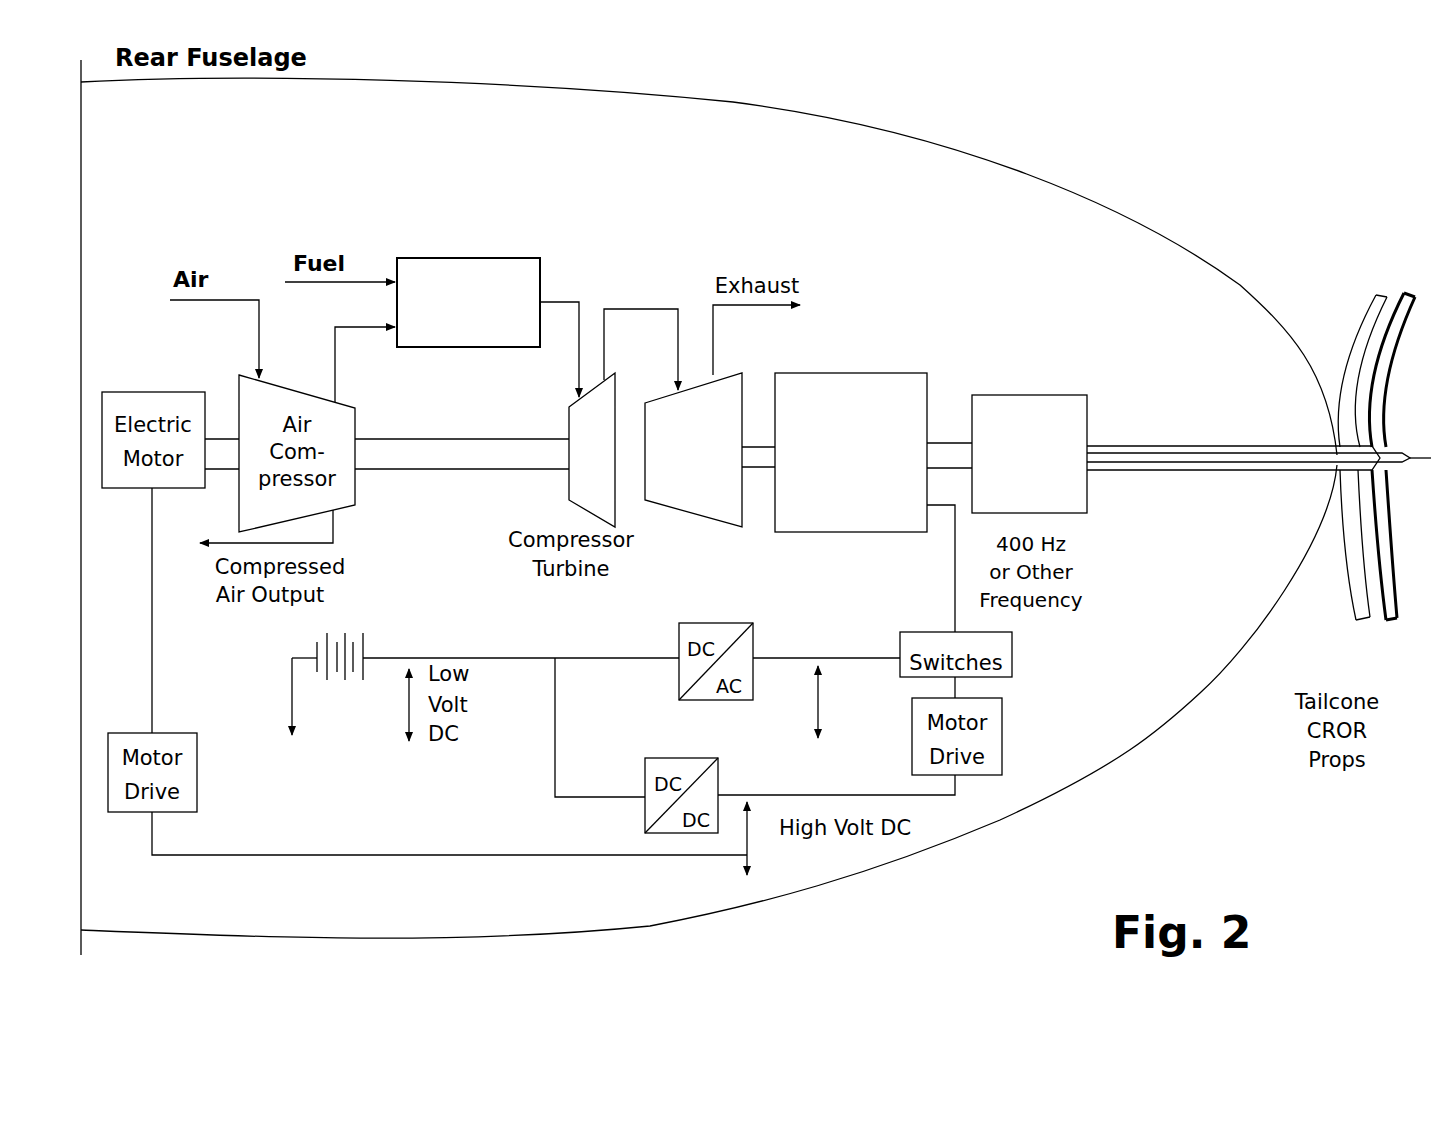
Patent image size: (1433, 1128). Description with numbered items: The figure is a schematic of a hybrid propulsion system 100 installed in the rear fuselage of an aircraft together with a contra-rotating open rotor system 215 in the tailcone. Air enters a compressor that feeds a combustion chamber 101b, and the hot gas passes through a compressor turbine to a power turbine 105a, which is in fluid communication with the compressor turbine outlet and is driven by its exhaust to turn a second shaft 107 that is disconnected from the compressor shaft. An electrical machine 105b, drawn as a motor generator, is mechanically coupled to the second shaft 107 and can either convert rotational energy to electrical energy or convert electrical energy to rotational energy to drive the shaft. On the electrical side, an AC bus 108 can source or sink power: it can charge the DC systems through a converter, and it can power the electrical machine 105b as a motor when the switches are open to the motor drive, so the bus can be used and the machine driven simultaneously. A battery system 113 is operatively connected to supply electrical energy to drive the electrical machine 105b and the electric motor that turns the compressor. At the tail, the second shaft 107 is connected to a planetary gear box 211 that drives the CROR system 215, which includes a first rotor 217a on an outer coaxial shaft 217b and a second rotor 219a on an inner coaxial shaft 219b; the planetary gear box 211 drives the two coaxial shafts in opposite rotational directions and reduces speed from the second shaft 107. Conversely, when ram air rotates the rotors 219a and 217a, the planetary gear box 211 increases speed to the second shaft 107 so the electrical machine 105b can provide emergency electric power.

The hybrid propulsion system 100 is at (888, 264).
The combustion chamber 101b is at (467, 256).
The power turbine 105a is at (715, 507).
The electrical machine 105b is at (824, 411).
The second shaft 107 is at (945, 453).
The AC bus 108 is at (828, 708).
The battery system 113 is at (362, 680).
The planetary gear box 211 is at (1064, 417).
The contra-rotating open rotor (CROR) system 215 is at (1201, 401).
The first rotor 217a is at (1387, 625).
The outer coaxial shaft 217b is at (1168, 470).
The second rotor 219a is at (1340, 592).
The inner coaxial shaft 219b is at (1280, 462).